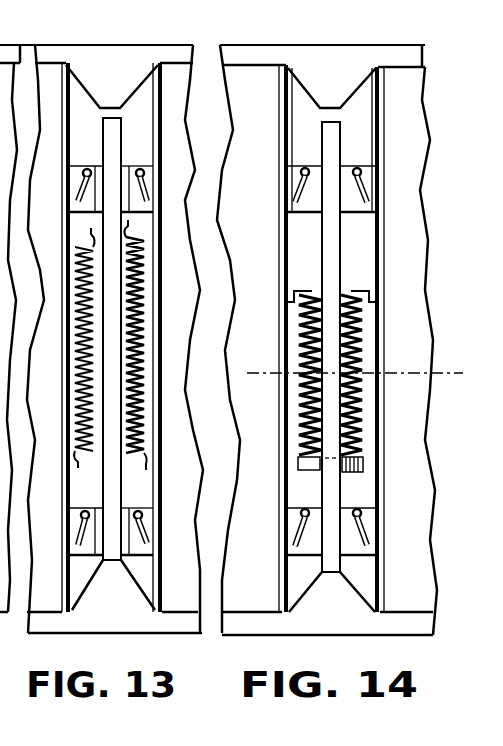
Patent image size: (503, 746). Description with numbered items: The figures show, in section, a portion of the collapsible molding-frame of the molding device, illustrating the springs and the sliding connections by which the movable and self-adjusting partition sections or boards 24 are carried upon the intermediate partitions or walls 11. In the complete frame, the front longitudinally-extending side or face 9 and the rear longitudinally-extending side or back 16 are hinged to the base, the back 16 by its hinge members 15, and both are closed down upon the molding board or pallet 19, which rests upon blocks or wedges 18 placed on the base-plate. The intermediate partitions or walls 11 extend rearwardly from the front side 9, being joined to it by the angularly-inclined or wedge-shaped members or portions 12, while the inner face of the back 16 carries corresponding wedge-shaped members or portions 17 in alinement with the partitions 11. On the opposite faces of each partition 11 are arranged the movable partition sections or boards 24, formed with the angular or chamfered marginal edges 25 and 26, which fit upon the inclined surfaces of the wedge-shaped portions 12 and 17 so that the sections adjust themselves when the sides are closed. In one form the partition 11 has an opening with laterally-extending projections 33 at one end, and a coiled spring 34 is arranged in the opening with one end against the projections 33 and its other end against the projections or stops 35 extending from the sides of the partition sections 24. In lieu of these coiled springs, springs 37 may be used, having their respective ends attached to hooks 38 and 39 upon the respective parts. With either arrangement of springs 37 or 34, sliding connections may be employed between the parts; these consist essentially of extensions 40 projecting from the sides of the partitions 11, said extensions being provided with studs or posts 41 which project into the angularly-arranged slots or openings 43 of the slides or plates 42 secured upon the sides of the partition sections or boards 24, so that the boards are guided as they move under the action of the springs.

In FIG. 13, the front side of the molding-frame 9 is at (247, 627).
In FIG. 13, the intermediate partition 11 is at (110, 472).
In FIG. 13, the wedge-shaped member 12 is at (92, 592).
In FIG. 14, the wedge-shaped member 12 is at (333, 580).
In FIG. 14, the hinge member 15 is at (360, 363).
In FIG. 13, the rear side of the molding-frame 16 is at (48, 50).
In FIG. 14, the rear side of the molding-frame 16 is at (402, 58).
In FIG. 13, the wedge-shaped member 17 is at (100, 75).
In FIG. 14, the wedge-shaped member 17 is at (320, 62).
In FIG. 13, the block or wedge 18 is at (100, 117).
In FIG. 14, the block or wedge 18 is at (332, 367).
In FIG. 13, the molding board or pallet 19 is at (240, 86).
In FIG. 14, the molding board or pallet 19 is at (405, 82).
In FIG. 13, the movable partition section 24 is at (111, 337).
In FIG. 14, the movable partition section 24 is at (285, 420).
In FIG. 13, the chamfered marginal edge 25 is at (48, 635).
In FIG. 14, the chamfered marginal edge 25 is at (287, 610).
In FIG. 13, the chamfered marginal edge 26 is at (66, 72).
In FIG. 14, the chamfered marginal edge 26 is at (288, 68).
In FIG. 14, the laterally-extending projection 33 is at (302, 466).
In FIG. 14, the coiled spring 34 is at (358, 337).
In FIG. 14, the projection or stop 35 is at (332, 285).
In FIG. 13, the spring 37 is at (77, 350).
In FIG. 13, the hook 38 is at (80, 243).
In FIG. 13, the hook 39 is at (72, 455).
In FIG. 13, the extension 40 is at (98, 168).
In FIG. 14, the extension 40 is at (305, 168).
In FIG. 13, the stud or post 41 is at (82, 168).
In FIG. 14, the stud or post 41 is at (360, 172).
In FIG. 13, the slide or plate 42 is at (90, 212).
In FIG. 14, the slide or plate 42 is at (302, 213).
In FIG. 13, the angularly-arranged slot 43 is at (78, 190).
In FIG. 14, the angularly-arranged slot 43 is at (368, 190).